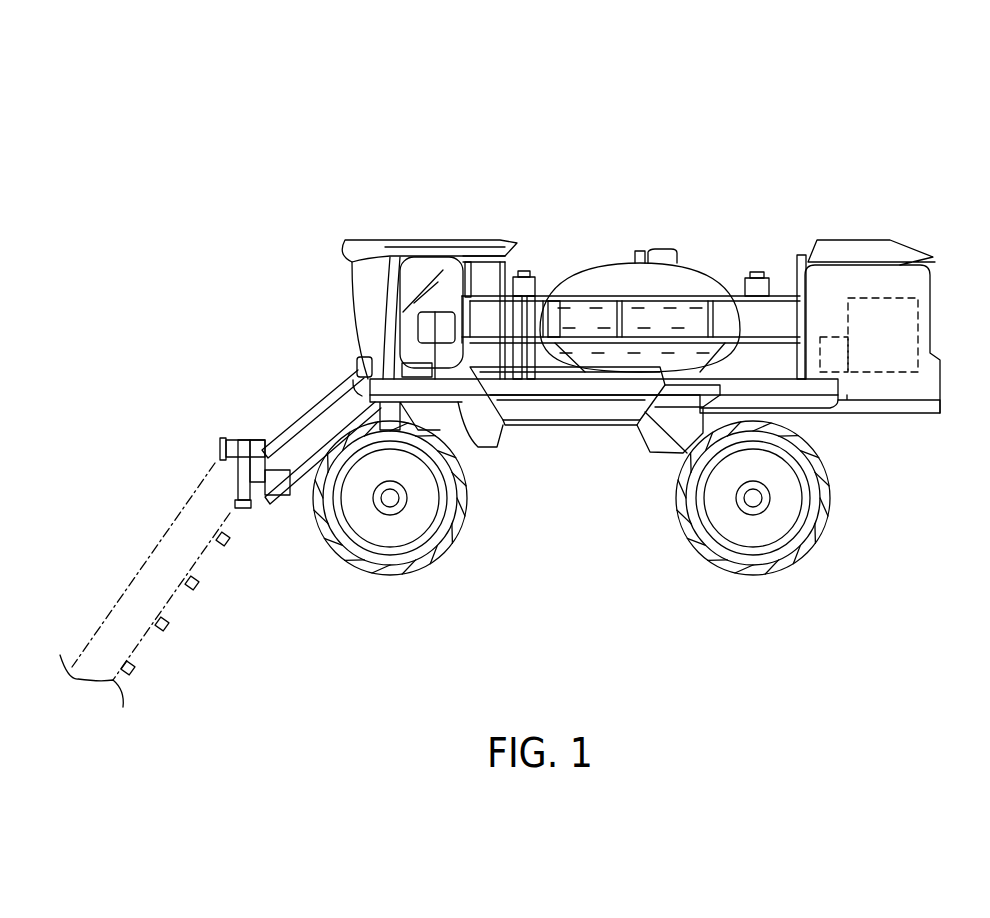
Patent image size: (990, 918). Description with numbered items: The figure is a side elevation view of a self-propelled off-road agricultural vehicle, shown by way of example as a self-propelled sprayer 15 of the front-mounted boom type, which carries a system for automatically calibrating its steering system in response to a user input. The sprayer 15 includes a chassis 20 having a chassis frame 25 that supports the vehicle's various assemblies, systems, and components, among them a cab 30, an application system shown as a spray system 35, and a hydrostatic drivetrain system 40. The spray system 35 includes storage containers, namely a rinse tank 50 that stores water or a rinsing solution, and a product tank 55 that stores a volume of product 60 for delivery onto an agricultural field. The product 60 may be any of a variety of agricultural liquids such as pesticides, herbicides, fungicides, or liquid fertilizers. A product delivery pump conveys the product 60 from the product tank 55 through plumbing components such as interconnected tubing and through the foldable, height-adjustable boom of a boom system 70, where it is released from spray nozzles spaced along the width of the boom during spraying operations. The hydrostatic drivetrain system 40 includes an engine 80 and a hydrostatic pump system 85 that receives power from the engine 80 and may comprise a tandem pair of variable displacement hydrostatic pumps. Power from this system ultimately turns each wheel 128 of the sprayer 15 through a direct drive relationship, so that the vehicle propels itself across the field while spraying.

The self-propelled sprayer 15 is at (686, 136).
The chassis 20 is at (593, 428).
The chassis frame 25 is at (650, 452).
The cab 30 is at (428, 239).
The spray system 35 is at (714, 257).
The hydrostatic drivetrain system 40 is at (854, 382).
The rinse tank 50 is at (759, 279).
The product tank 55 is at (609, 259).
The product 60 is at (567, 313).
The boom system 70 is at (101, 587).
The engine 80 is at (892, 324).
The hydrostatic pump system 85 is at (832, 355).
The wheel 128 is at (430, 560).